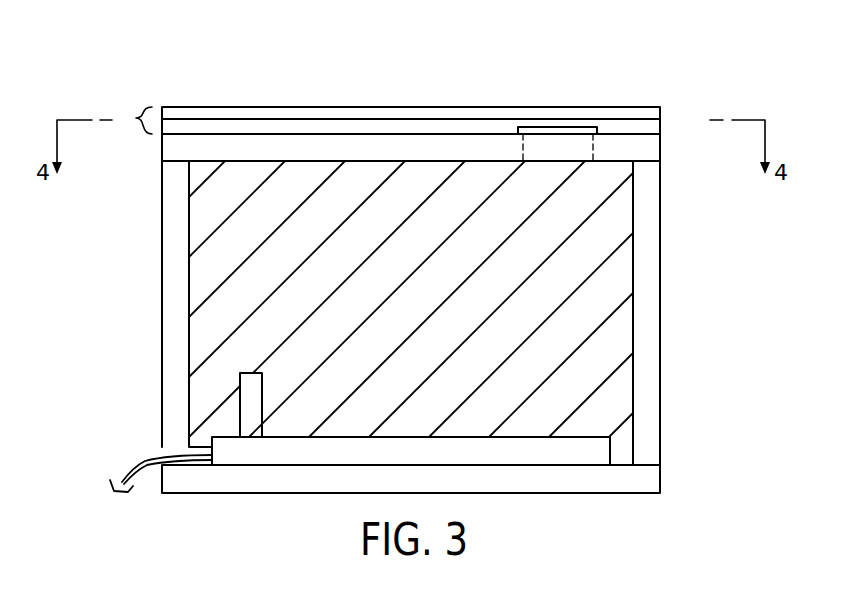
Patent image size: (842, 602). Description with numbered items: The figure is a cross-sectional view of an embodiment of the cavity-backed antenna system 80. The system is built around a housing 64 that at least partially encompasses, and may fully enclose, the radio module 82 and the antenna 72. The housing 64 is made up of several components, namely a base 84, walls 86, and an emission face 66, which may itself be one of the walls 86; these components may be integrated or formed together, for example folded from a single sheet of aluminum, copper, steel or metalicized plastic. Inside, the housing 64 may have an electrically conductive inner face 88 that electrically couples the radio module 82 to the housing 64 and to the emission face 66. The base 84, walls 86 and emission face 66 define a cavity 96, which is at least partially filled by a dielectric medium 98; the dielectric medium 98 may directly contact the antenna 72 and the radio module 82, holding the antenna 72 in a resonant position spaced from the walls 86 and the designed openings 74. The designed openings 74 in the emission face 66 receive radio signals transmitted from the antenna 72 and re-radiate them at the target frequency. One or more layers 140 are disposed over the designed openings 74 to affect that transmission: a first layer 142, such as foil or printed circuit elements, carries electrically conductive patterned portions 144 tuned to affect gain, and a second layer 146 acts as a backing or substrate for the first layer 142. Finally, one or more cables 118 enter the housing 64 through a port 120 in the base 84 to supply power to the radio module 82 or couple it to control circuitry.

The cavity-backed antenna system 80 is at (182, 38).
The housing 64 is at (142, 220).
The emission face 66 is at (655, 147).
The layers 140 is at (136, 118).
The first layer 142 is at (630, 127).
The patterned portions 144 is at (558, 127).
The second layer 146 is at (328, 113).
The designed openings 74 is at (533, 165).
The electrically conductive inner face 88 is at (600, 170).
The cavity 96 is at (202, 280).
The walls 86 is at (175, 340).
The dielectric medium 98 is at (620, 335).
The antenna 72 is at (262, 395).
The radio module 82 is at (605, 452).
The base 84 is at (650, 480).
The port 120 is at (162, 449).
The cables 118 is at (150, 457).